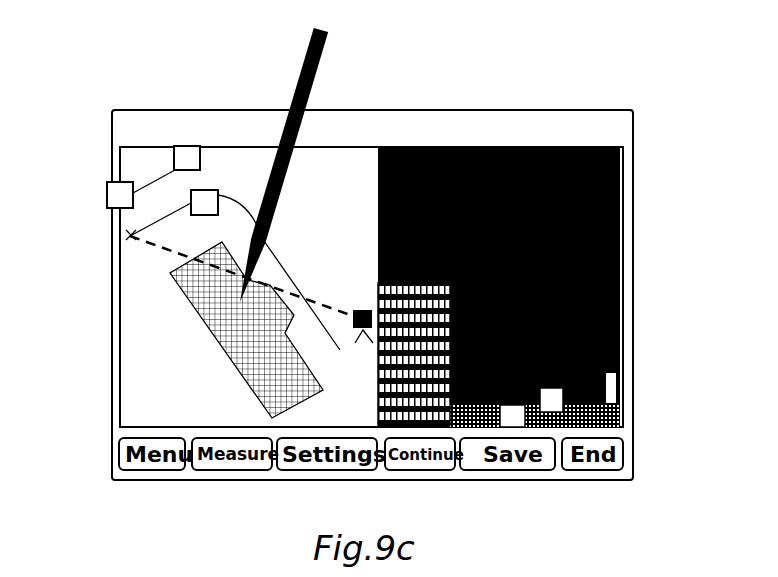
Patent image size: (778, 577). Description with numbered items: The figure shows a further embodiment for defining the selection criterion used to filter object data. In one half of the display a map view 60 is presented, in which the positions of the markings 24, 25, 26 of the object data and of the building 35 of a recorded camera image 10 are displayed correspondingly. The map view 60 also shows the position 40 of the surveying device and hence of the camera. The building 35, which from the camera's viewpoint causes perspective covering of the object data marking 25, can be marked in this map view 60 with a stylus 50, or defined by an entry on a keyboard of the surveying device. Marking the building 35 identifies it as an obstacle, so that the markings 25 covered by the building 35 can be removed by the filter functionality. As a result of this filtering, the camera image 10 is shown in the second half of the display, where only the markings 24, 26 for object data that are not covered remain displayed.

The camera image 10 is at (602, 147).
The marking of object data 24 is at (183, 152).
The object data marking 25 is at (117, 195).
The marking of object data 26 is at (463, 427).
The building 35 is at (193, 293).
The position of the surveying device 40 is at (365, 308).
The stylus 50 is at (317, 80).
The map view 60 is at (137, 407).